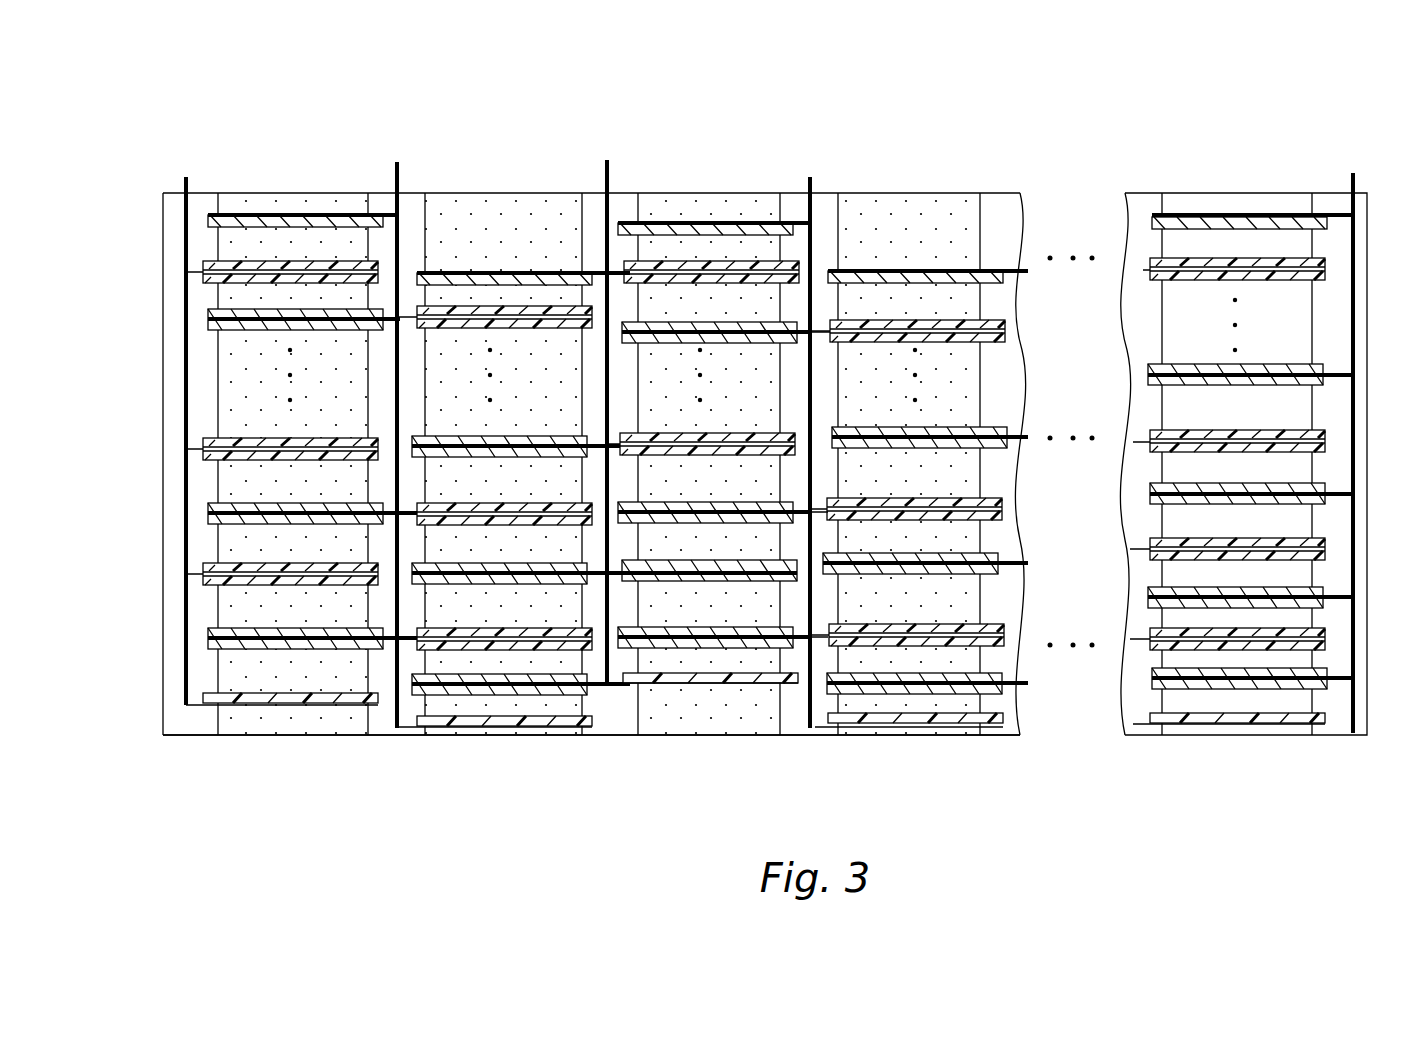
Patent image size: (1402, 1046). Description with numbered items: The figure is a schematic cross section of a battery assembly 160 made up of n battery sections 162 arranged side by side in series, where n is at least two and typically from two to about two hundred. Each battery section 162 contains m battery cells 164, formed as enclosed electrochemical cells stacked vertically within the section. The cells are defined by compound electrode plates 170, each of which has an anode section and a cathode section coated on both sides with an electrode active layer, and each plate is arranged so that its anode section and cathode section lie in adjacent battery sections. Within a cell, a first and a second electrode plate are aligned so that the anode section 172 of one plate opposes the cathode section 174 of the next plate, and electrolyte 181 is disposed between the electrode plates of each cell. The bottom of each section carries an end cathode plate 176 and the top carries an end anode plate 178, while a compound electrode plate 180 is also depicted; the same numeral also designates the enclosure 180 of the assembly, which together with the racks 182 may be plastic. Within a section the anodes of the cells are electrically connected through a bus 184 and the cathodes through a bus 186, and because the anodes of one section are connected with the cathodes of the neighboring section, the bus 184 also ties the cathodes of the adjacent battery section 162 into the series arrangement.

The battery assembly 160 is at (998, 82).
The battery section 162 is at (278, 152).
The battery cell 164 is at (283, 459).
The compound electrode plate 170 is at (564, 437).
The anode section 172 is at (548, 452).
The cathode section 174 is at (542, 555).
The end cathode plate 176 is at (260, 704).
The end anode plate 178 is at (295, 214).
The enclosure 180 is at (233, 193).
The electrolyte 181 is at (225, 481).
The rack 182 is at (178, 198).
The bus 184 is at (182, 326).
The bus 186 is at (405, 214).